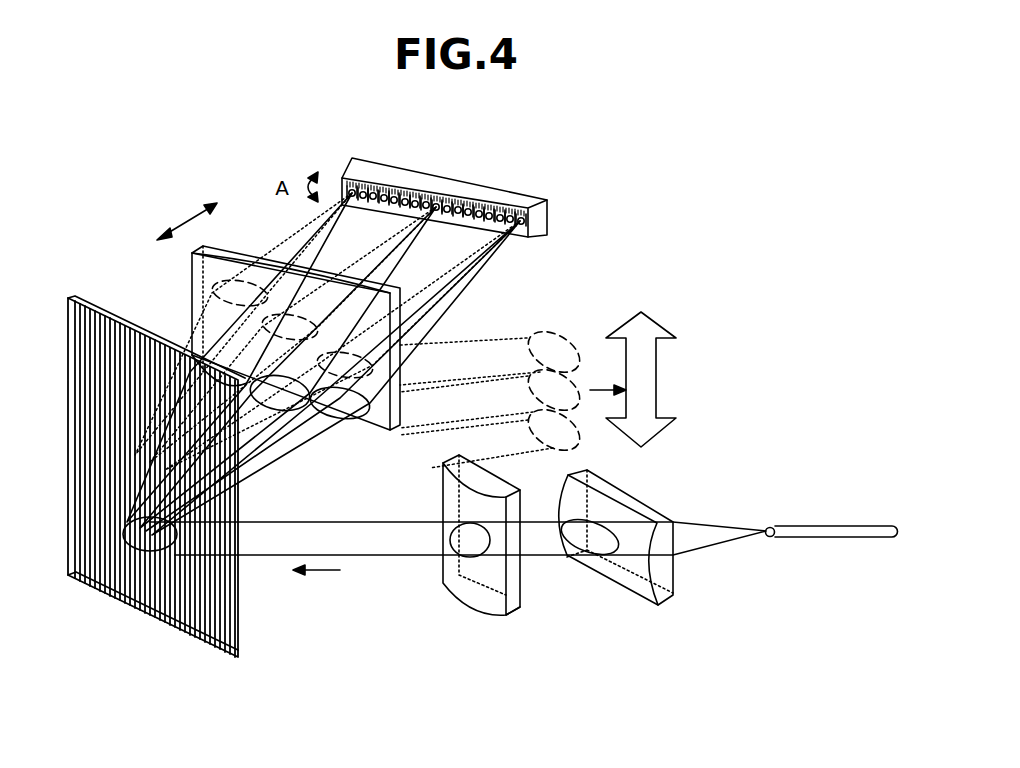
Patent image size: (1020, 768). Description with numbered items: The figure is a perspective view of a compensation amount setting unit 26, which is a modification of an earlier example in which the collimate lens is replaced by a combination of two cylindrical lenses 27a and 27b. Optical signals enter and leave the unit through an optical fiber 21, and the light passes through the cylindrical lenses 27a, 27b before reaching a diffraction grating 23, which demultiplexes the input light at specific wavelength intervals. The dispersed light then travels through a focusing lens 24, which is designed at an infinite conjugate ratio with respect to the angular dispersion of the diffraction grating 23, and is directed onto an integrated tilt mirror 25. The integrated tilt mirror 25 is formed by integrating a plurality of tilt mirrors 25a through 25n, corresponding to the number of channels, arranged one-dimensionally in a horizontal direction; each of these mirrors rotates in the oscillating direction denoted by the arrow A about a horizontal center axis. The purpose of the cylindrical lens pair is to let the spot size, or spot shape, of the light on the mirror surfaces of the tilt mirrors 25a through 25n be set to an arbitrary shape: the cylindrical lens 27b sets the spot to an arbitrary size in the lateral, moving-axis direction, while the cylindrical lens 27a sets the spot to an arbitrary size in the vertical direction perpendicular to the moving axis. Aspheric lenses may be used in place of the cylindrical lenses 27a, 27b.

The optical fiber 21 is at (826, 538).
The diffraction grating 23 is at (70, 300).
The focusing lens 24 is at (190, 272).
The integrated tilt mirror 25 is at (422, 202).
The tilt mirror 25a is at (350, 190).
The tilt mirror 25n is at (521, 225).
The compensation amount setting unit 26 is at (592, 160).
The cylindrical lens 27a is at (650, 505).
The cylindrical lens 27b is at (500, 613).